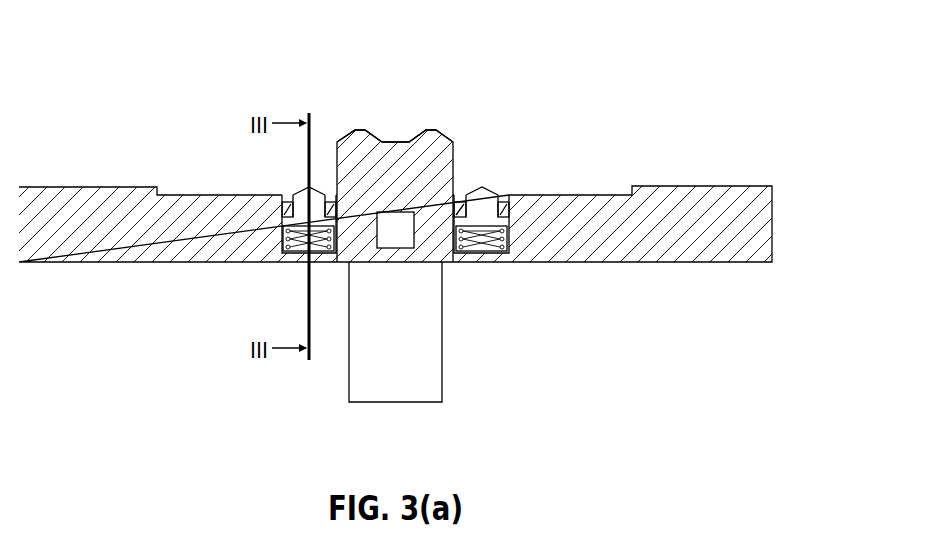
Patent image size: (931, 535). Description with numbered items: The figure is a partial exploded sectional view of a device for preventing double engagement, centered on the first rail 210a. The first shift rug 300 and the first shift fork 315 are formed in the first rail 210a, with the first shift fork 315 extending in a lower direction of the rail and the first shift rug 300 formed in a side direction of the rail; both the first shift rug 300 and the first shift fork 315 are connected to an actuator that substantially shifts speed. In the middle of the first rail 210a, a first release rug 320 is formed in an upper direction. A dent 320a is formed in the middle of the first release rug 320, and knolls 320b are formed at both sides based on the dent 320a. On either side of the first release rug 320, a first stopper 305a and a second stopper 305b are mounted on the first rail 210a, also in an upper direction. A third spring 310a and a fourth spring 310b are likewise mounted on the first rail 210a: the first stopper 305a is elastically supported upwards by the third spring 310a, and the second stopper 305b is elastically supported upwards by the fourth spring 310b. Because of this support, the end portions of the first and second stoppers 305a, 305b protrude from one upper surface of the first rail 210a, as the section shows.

The first rail 210a is at (92, 245).
The first shift rug 300 is at (395, 240).
The first shift fork 315 is at (430, 391).
The first release rug 320 is at (445, 48).
The dent 320a is at (402, 141).
The knolls 320b is at (357, 129).
The first stopper 305a is at (298, 198).
The second stopper 305b is at (483, 196).
The third spring 310a is at (285, 253).
The fourth spring 310b is at (487, 252).